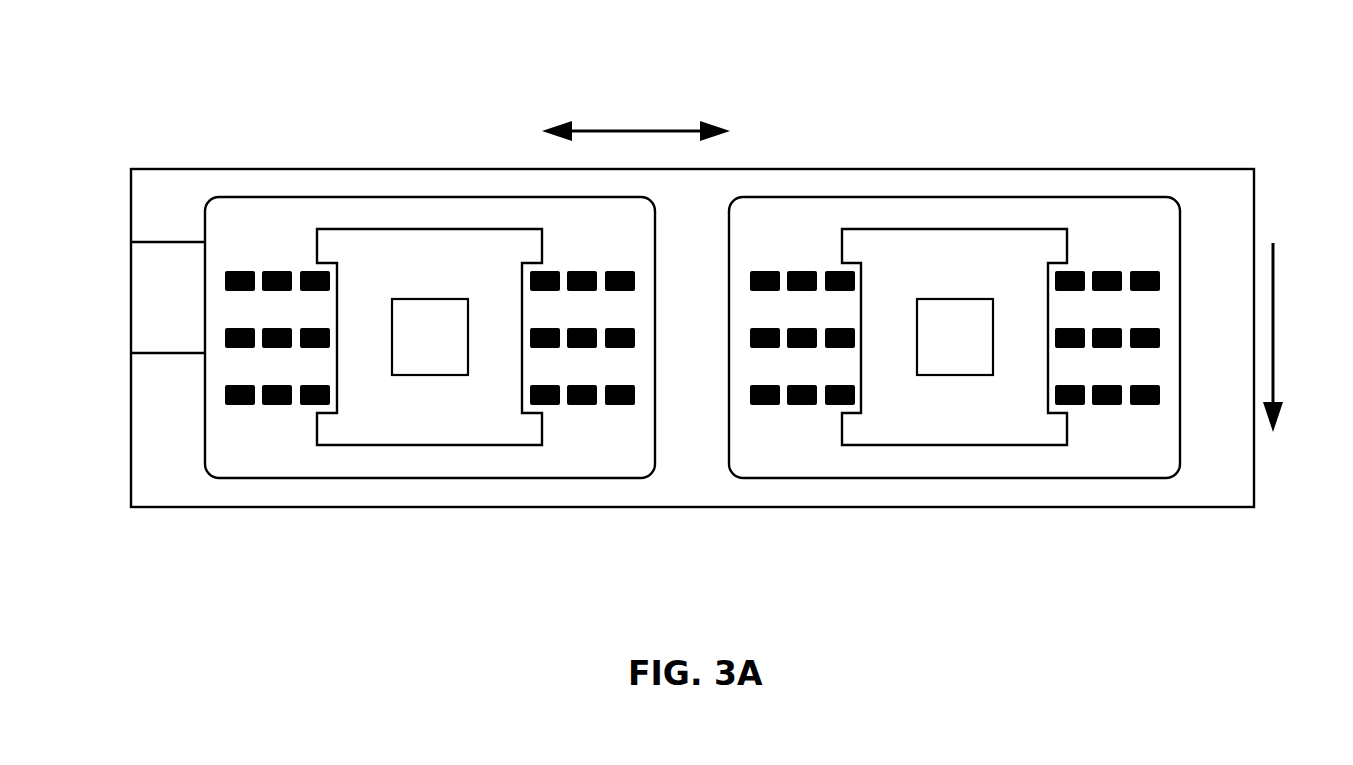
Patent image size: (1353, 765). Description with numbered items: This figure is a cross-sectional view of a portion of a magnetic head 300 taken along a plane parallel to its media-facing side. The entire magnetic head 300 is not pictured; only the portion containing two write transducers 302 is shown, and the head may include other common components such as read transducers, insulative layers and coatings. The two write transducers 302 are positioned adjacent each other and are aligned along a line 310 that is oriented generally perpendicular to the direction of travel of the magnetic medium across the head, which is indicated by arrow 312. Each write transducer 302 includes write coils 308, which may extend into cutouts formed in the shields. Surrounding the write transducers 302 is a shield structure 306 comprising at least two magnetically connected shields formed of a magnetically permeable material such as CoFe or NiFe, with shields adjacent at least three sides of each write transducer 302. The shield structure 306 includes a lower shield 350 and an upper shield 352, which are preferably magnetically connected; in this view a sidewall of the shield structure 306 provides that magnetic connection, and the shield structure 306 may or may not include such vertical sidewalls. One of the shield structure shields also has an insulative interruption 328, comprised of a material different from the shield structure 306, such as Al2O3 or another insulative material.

The magnetic head 300 is at (655, 280).
The write transducer 302 is at (454, 284).
The shield structure 306 is at (130, 430).
The write coil 308 is at (300, 388).
The line 310 is at (590, 129).
The arrow 312 is at (1273, 322).
The insulative interruption 328 is at (188, 309).
The lower shield 350 is at (365, 495).
The upper shield 352 is at (946, 186).